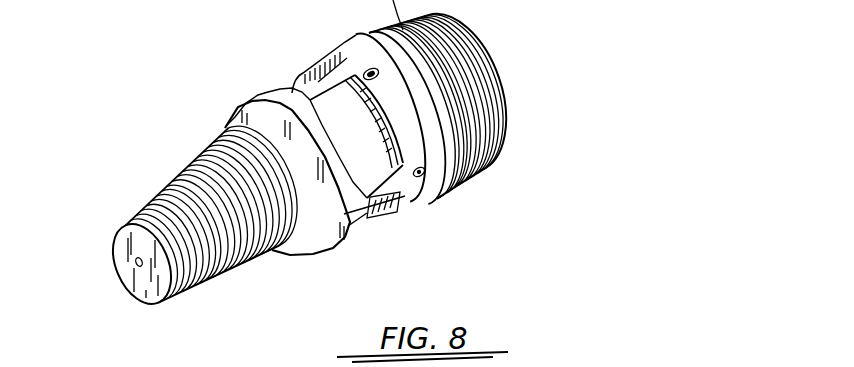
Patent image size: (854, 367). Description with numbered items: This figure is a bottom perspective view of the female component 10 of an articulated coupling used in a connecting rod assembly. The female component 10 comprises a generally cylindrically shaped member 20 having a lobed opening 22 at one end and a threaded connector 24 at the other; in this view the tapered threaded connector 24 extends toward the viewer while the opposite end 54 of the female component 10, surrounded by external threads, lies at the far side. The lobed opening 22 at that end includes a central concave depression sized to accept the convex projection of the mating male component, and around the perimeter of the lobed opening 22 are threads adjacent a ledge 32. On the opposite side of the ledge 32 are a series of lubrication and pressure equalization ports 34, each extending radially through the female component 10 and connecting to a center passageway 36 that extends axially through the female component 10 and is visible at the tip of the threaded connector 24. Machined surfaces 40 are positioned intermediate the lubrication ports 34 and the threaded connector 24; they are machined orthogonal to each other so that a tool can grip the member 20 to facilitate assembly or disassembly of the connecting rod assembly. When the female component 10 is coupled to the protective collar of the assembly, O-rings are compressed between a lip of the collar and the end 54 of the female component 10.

The female component 10 is at (247, 92).
The generally cylindrically shaped member 20 is at (342, 238).
The lobed opening 22 is at (169, 7).
The threaded connector 24 is at (236, 268).
The ledge 32 is at (362, 31).
The lubrication and pressure equalization ports 34 is at (378, 80).
The center passageway 36 is at (136, 262).
The machined surfaces 40 is at (392, 164).
The end of female component 54 is at (497, 72).